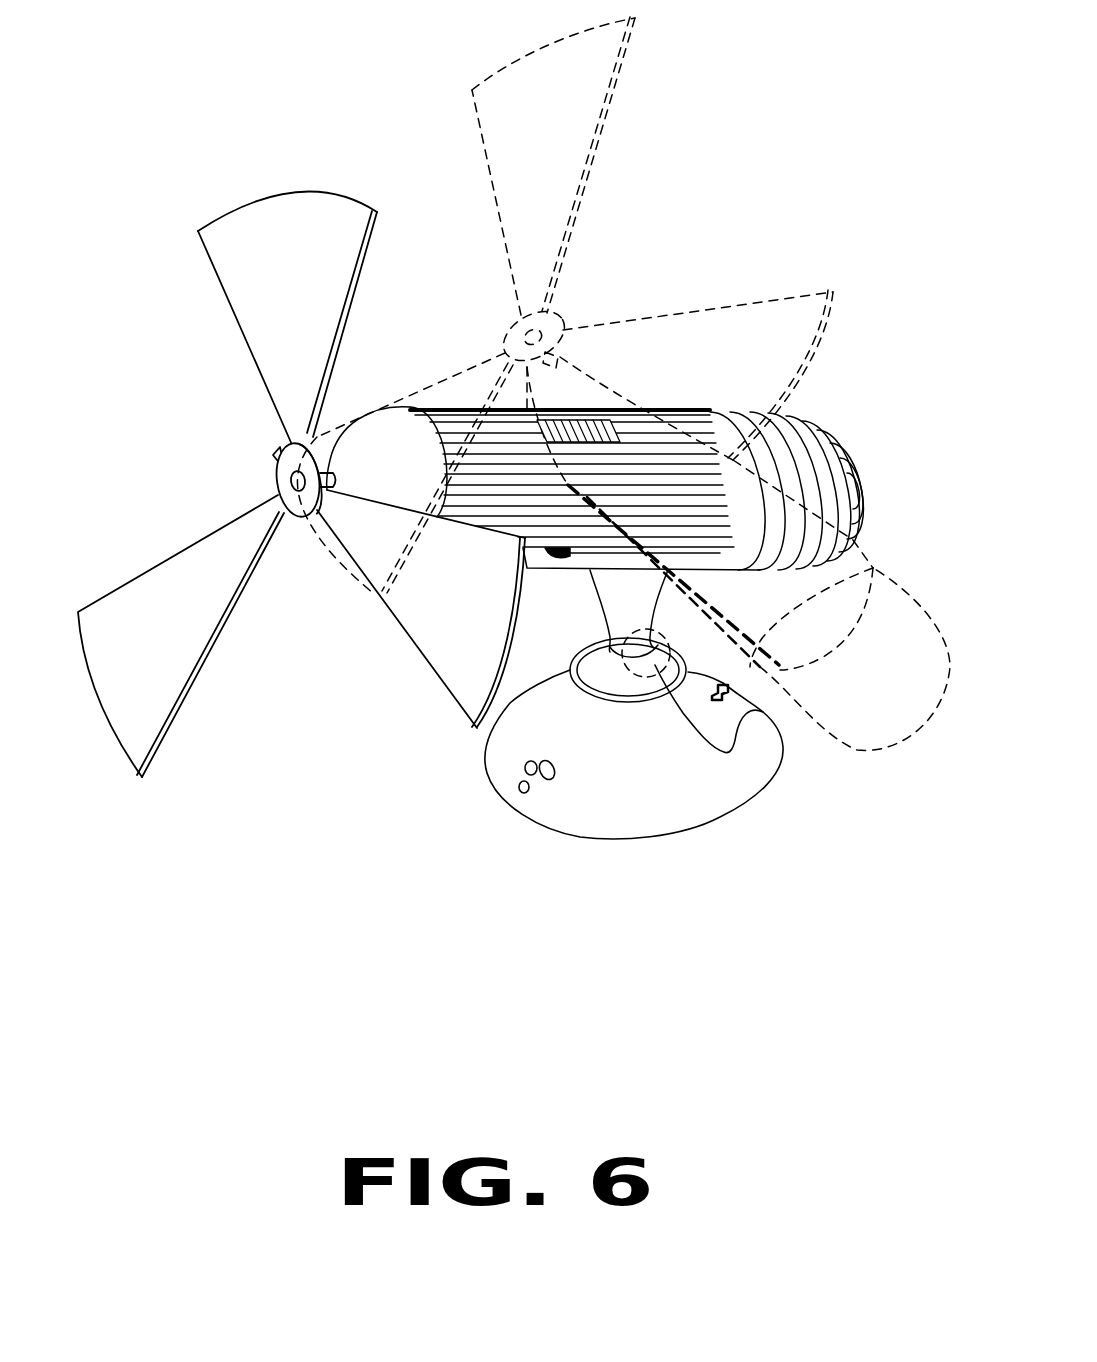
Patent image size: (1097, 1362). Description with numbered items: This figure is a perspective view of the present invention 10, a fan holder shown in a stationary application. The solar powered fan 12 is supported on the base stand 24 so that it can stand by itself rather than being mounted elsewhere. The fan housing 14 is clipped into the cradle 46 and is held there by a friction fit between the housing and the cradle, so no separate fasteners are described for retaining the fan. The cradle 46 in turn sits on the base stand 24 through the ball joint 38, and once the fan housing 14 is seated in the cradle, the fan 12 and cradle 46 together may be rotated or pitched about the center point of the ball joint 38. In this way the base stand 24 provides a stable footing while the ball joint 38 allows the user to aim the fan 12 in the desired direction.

The present invention 10 is at (776, 175).
The solar powered fan 12 is at (615, 413).
The fan housing 14 is at (468, 410).
The cradle 46 is at (695, 552).
The ball joint 38 is at (647, 663).
The base stand 24 is at (577, 833).